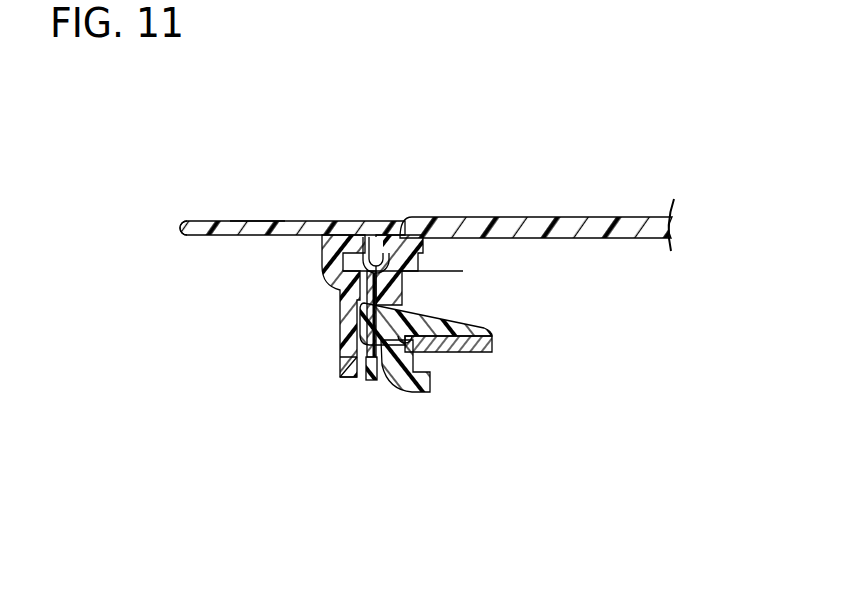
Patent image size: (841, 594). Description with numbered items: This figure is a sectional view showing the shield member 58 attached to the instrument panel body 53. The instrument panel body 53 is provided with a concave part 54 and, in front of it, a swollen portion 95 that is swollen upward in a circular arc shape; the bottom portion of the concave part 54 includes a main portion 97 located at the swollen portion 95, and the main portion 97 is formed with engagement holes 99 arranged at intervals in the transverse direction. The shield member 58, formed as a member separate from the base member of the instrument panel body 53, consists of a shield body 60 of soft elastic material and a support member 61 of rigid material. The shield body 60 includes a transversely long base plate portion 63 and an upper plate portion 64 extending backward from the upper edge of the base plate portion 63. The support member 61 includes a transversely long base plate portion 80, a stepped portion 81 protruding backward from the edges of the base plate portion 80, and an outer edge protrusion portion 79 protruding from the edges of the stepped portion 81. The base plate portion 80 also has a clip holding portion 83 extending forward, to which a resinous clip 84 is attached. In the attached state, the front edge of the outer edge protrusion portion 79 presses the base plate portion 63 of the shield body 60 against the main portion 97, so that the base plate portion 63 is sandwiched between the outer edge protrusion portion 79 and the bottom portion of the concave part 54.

The instrument panel body 53 is at (615, 208).
The concave part 54 is at (384, 236).
The shield member 58 is at (303, 212).
The shield body 60 is at (187, 218).
The support member 61 is at (345, 385).
The base plate portion 63 is at (371, 382).
The upper plate portion 64 is at (257, 222).
The outer edge protrusion portion 79 is at (402, 272).
The base plate portion 80 is at (340, 365).
The stepped portion 81 is at (322, 257).
The clip holding portion 83 is at (449, 353).
The resinous clip 84 is at (486, 328).
The swollen portion 95 is at (520, 217).
The main portion 97 is at (384, 233).
The engagement hole 99 is at (412, 393).